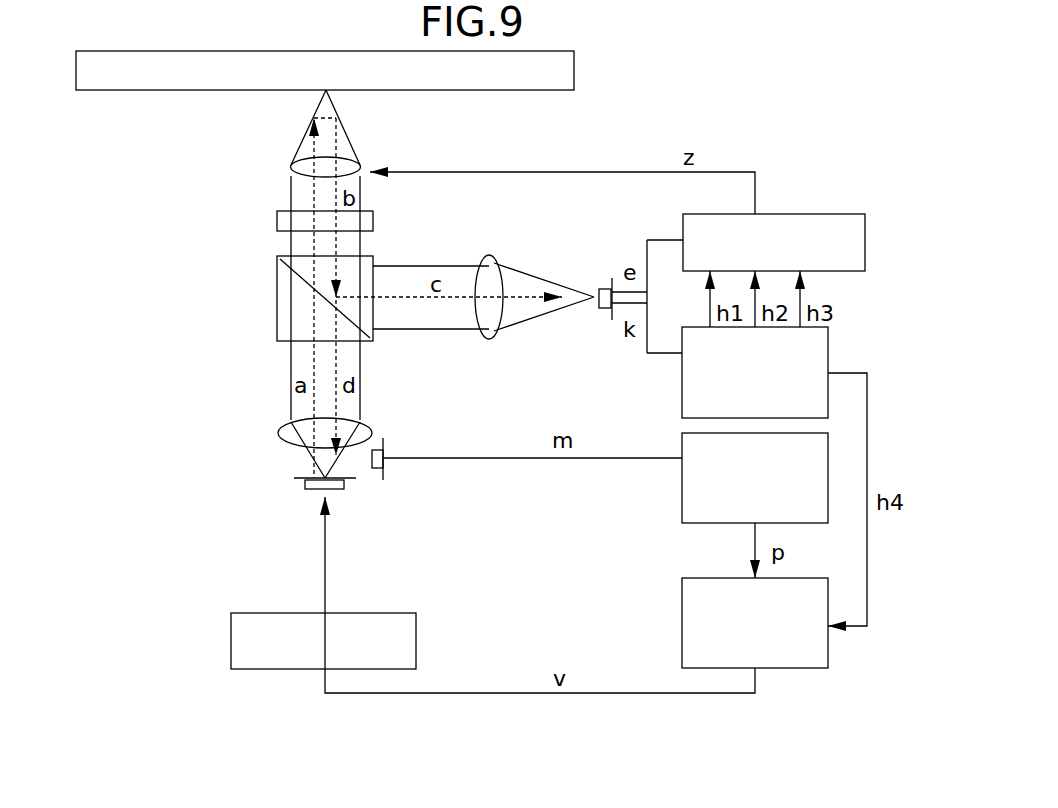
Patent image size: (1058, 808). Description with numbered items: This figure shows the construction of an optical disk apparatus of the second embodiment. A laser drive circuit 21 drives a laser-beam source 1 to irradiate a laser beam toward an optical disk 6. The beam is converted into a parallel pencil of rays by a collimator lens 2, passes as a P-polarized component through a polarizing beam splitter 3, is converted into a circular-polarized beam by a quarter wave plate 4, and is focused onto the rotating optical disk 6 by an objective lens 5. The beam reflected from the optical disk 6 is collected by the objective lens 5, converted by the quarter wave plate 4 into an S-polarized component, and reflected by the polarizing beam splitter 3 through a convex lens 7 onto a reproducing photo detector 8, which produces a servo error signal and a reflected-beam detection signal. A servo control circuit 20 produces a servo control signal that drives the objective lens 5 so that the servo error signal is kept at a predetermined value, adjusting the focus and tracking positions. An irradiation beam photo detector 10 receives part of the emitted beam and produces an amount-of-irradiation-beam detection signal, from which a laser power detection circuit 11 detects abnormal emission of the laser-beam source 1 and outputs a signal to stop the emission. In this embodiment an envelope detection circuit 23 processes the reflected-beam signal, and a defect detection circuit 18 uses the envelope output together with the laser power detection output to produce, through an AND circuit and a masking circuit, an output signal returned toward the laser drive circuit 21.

The laser-beam source 1 is at (300, 482).
The collimator lens 2 is at (278, 433).
The polarizing beam splitter 3 is at (277, 298).
The quarter wave plate 4 is at (277, 222).
The objective lens 5 is at (291, 167).
The optical disk 6 is at (574, 70).
The convex lens 7 is at (486, 339).
The reproducing photo detector 8 is at (604, 310).
The irradiation beam photo detector 10 is at (386, 466).
The laser power detection circuit 11 is at (682, 478).
The defect detection circuit 18 is at (682, 625).
The servo control circuit 20 is at (865, 245).
The laser drive circuit 21 is at (231, 640).
The envelope detection circuit 23 is at (682, 384).